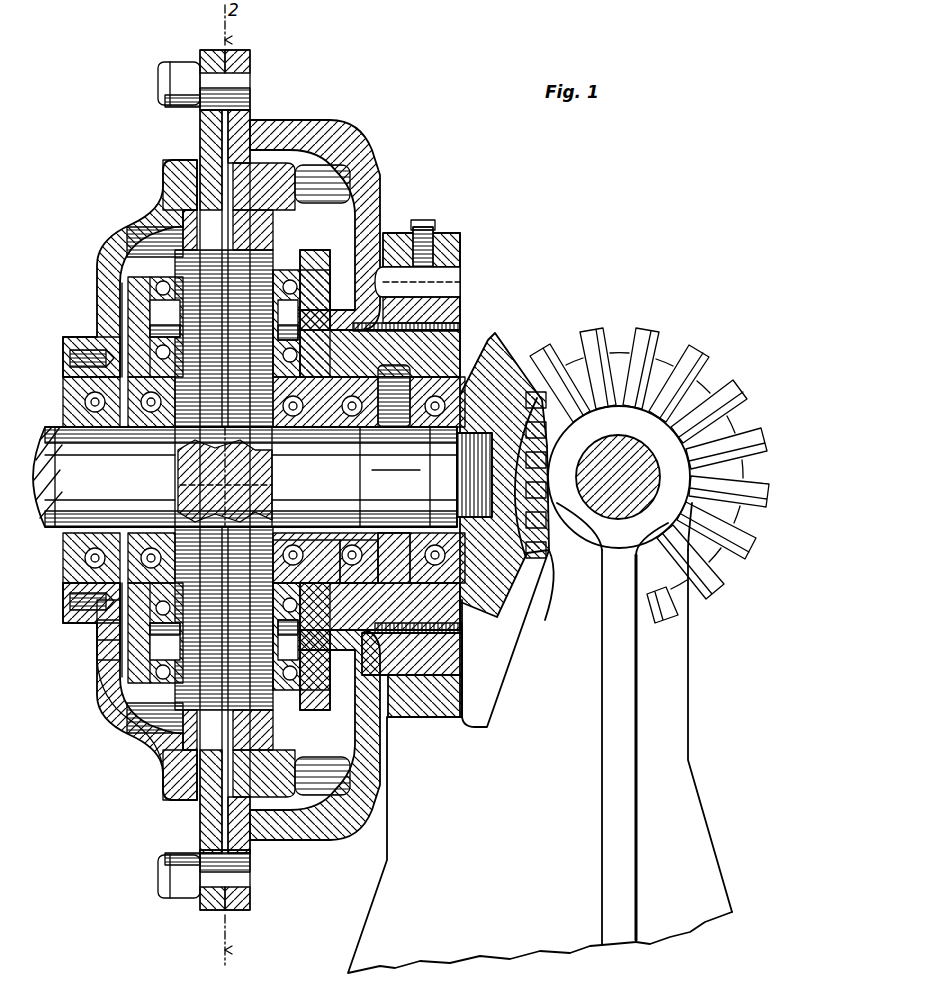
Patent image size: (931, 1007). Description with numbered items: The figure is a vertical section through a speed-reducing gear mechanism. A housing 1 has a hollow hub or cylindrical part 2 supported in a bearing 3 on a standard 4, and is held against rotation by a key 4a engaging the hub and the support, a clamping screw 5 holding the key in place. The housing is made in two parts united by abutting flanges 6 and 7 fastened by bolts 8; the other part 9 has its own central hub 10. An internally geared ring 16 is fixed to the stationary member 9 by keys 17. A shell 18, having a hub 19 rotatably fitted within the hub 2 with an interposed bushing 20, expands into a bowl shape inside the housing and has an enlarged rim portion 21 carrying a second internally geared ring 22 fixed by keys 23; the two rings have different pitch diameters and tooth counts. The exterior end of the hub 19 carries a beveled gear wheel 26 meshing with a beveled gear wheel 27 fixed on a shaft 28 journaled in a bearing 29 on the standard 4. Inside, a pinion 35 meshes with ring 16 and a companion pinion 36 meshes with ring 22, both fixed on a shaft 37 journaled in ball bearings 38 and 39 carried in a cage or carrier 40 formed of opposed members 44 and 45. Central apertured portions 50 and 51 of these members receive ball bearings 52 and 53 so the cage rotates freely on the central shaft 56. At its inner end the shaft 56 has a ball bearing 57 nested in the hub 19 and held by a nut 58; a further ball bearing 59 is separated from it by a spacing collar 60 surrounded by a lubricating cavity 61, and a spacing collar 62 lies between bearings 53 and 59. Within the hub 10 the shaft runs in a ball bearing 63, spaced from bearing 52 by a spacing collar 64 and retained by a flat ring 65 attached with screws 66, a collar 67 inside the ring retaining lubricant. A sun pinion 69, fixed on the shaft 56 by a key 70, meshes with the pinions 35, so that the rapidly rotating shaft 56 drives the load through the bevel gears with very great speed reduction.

The housing 1 is at (362, 232).
The hollow hub or cylindrical part 2 is at (422, 310).
The bearing 3 is at (442, 252).
The standard 4 is at (690, 757).
The key 4a is at (442, 278).
The clamping screw 5 is at (426, 230).
The flange 6 is at (212, 50).
The flange 7 is at (248, 52).
The bolt 8 is at (245, 80).
The housing part 9 is at (110, 232).
The hub or cylindrical central part 10 is at (90, 340).
The internally geared ring 16 is at (175, 192).
The key 17 is at (195, 760).
The shell 18 is at (332, 182).
The hub or cylindrical part 19 is at (458, 348).
The bushing 20 is at (452, 327).
The rim portion 21 is at (260, 178).
The internally geared ring 22 is at (285, 160).
The key 23 is at (292, 762).
The beveled gear wheel 26 is at (520, 362).
The beveled gear wheel 27 is at (655, 332).
The shaft 28 is at (650, 470).
The bearing 29 is at (650, 535).
The pinion 35 is at (150, 247).
The pinion 36 is at (305, 262).
The shaft 37 is at (156, 315).
The ball bearing 38 is at (156, 288).
The ball bearing 39 is at (305, 290).
The cage or carrier 40 is at (172, 712).
The cage member 44 is at (100, 700).
The cage member 45 is at (420, 657).
The central apertured portion 50 is at (108, 615).
The central apertured portion 51 is at (372, 565).
The ball bearing 52 is at (125, 630).
The ball bearing 53 is at (360, 580).
The shaft 56 is at (60, 465).
The ball bearing 57 is at (497, 617).
The nut 58 is at (492, 400).
The ball bearing 59 is at (352, 420).
The spacing collar 60 is at (378, 556).
The lubricating cavity 61 is at (395, 422).
The spacing collar 62 is at (310, 442).
The ball bearing 63 is at (88, 400).
The spacing collar 64 is at (152, 422).
The flat ring 65 is at (70, 622).
The screw 66 is at (70, 356).
The collar 67 is at (55, 545).
The sun pinion 69 is at (205, 500).
The key 70 is at (160, 518).